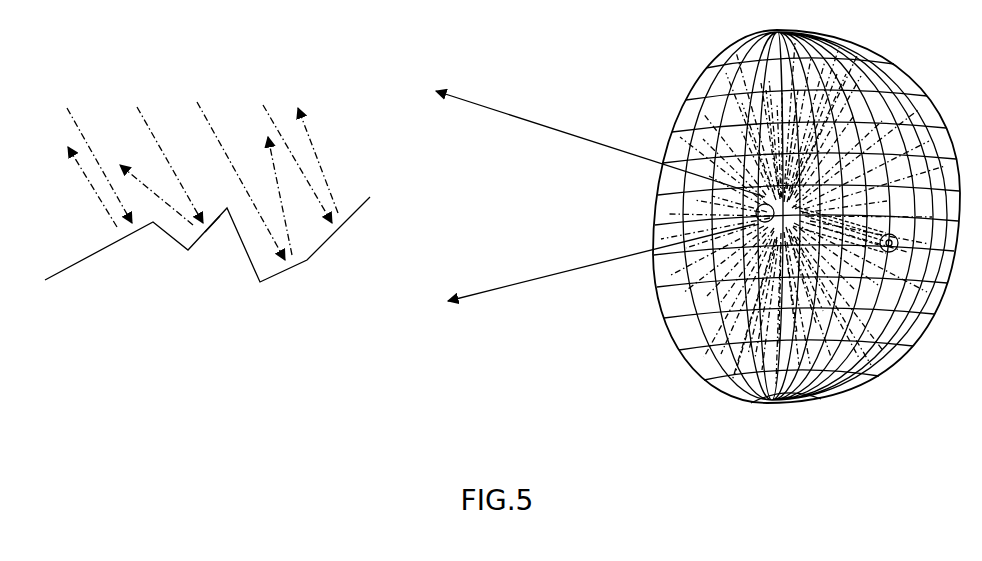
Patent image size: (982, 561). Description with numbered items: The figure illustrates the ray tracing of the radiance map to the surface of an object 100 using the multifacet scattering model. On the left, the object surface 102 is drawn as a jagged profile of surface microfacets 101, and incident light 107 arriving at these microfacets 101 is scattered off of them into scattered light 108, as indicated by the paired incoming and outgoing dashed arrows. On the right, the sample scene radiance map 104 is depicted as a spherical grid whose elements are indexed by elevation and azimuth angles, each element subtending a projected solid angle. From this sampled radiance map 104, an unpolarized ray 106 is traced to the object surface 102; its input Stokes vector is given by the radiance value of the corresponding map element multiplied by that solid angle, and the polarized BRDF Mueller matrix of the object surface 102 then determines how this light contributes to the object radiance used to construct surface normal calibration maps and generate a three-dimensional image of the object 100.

The object 100 is at (750, 196).
The surface microfacets 101 is at (212, 229).
The object surface 102 is at (67, 263).
The sample scene radiance map 104 is at (893, 62).
The unpolarized ray 106 is at (760, 332).
The incident light 107 is at (140, 115).
The scattered light 108 is at (313, 148).